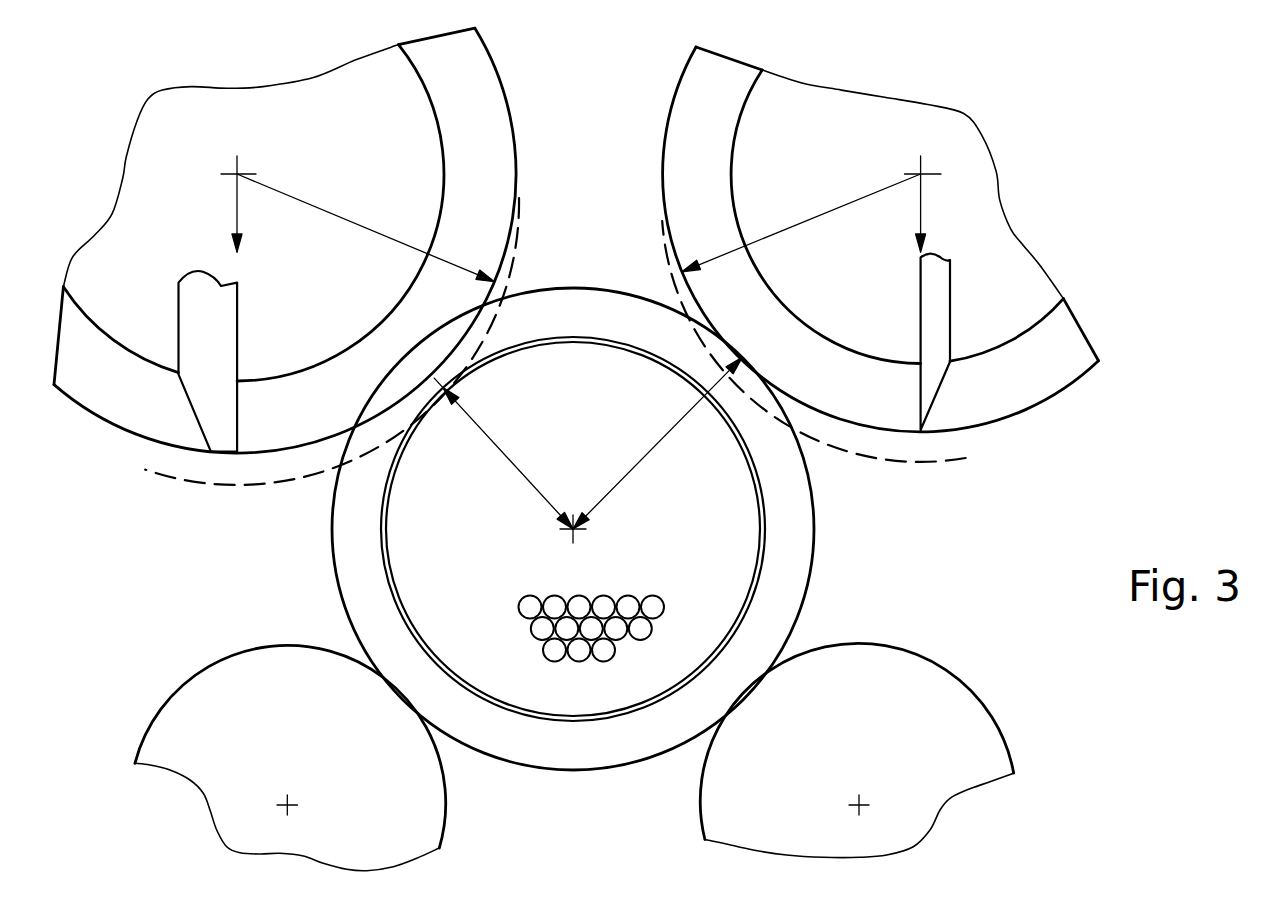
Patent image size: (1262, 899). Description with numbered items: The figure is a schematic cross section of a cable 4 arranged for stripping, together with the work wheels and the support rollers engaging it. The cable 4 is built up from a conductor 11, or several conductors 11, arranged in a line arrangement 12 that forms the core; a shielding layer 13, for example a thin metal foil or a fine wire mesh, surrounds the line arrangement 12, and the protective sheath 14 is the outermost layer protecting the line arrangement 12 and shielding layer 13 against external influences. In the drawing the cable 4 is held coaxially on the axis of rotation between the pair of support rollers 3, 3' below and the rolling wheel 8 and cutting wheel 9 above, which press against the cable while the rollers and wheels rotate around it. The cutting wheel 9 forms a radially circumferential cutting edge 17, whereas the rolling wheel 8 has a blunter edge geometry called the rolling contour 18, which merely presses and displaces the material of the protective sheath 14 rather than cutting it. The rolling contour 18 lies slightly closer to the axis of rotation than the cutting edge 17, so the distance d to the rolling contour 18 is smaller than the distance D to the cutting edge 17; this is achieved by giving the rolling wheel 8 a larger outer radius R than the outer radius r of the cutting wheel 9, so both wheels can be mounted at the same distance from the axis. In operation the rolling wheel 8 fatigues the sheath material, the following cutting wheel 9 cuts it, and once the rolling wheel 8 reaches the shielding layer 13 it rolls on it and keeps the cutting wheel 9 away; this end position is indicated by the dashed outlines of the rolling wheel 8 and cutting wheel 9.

The support roller 3 is at (254, 757).
The support roller 3' is at (887, 750).
The cable 4 is at (574, 567).
The rolling wheel 8 is at (372, 125).
The cutting wheel 9 is at (788, 128).
The conductor 11 is at (569, 630).
The line arrangement 12 is at (554, 687).
The shielding layer 13 is at (762, 533).
The protective sheath 14 is at (757, 622).
The cutting edge 17 is at (924, 435).
The rolling contour 18 is at (225, 457).